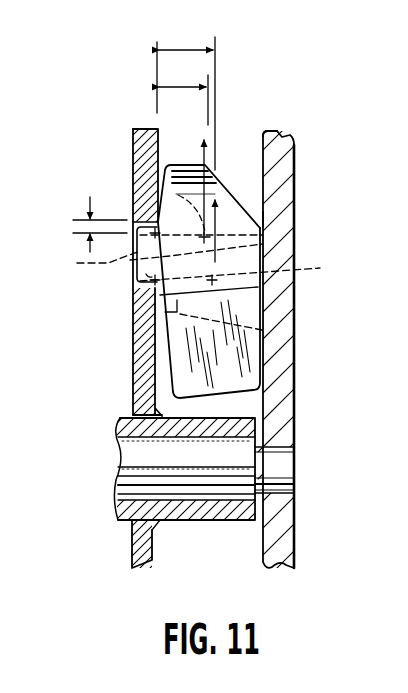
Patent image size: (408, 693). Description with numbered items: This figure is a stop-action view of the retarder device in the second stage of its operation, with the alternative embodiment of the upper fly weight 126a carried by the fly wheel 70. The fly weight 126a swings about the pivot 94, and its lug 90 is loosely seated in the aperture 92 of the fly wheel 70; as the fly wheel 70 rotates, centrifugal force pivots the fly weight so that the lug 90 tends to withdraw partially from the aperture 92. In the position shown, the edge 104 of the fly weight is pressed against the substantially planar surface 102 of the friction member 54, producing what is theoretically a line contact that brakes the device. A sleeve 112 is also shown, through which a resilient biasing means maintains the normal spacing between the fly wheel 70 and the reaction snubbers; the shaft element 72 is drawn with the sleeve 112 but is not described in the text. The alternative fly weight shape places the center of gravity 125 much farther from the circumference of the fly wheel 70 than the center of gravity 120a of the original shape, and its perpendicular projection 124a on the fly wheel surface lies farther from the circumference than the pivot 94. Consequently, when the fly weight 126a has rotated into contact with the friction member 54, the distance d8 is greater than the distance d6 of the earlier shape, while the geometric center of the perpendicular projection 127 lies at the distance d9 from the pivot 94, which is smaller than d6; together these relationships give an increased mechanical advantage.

The fly wheel 70 is at (152, 129).
The center of gravity 120a is at (132, 147).
The pivot 94 is at (156, 219).
The distance d9 is at (83, 227).
The perpendicular projection 127 is at (93, 258).
The lug 90 is at (137, 269).
The aperture 92 is at (140, 280).
The perpendicular projection of the center of gravity 124a is at (132, 312).
The fly weight 126a is at (185, 380).
The sleeve 112 is at (192, 430).
The substantially planar surface 102 is at (258, 141).
The edge 104 is at (265, 219).
The center of gravity 125 is at (249, 269).
The friction member 54 is at (286, 345).
The shaft 72 is at (285, 460).
The distance d6 is at (184, 87).
The distance d8 is at (186, 95).